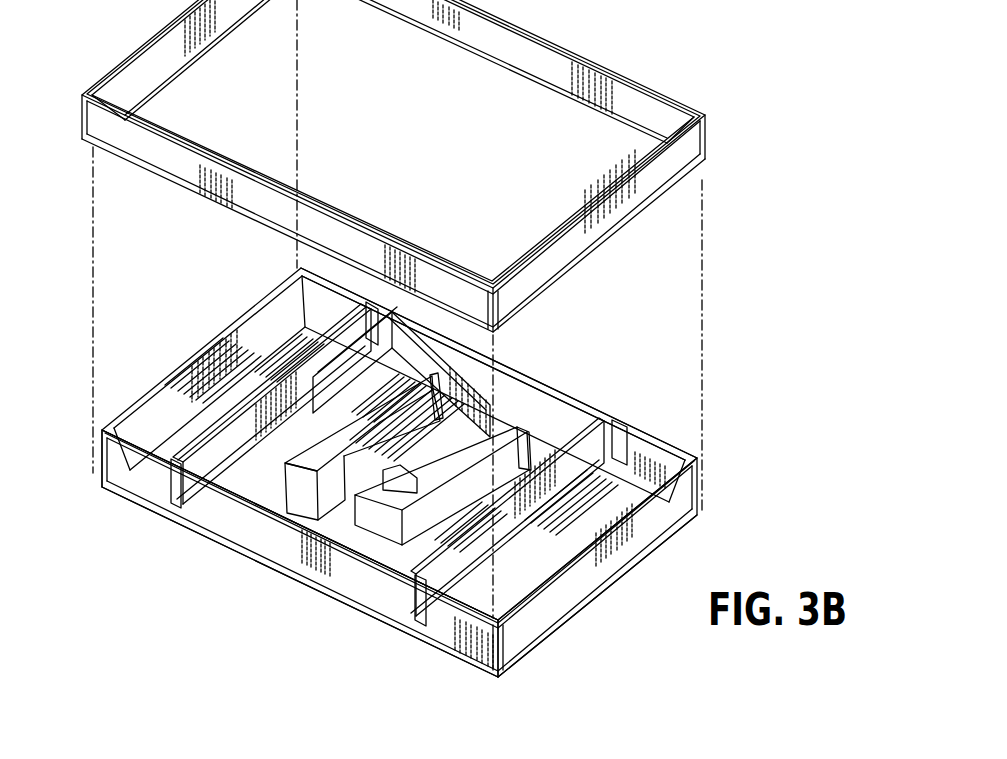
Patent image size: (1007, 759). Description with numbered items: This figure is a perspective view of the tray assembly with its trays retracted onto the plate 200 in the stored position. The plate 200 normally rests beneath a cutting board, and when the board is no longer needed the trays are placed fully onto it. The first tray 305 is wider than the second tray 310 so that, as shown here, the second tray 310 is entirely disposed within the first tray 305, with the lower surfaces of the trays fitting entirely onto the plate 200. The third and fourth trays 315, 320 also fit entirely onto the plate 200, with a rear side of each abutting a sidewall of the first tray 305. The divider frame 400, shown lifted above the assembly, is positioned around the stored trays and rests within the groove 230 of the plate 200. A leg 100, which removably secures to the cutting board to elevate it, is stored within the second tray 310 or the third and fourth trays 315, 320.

The divider frame 400 is at (532, 56).
The plate 200 is at (705, 508).
The leg 100 is at (527, 417).
The first tray 305 is at (363, 572).
The second tray 310 is at (563, 395).
The third tray 315 is at (655, 512).
The fourth tray 320 is at (184, 377).
The groove 230 is at (390, 615).